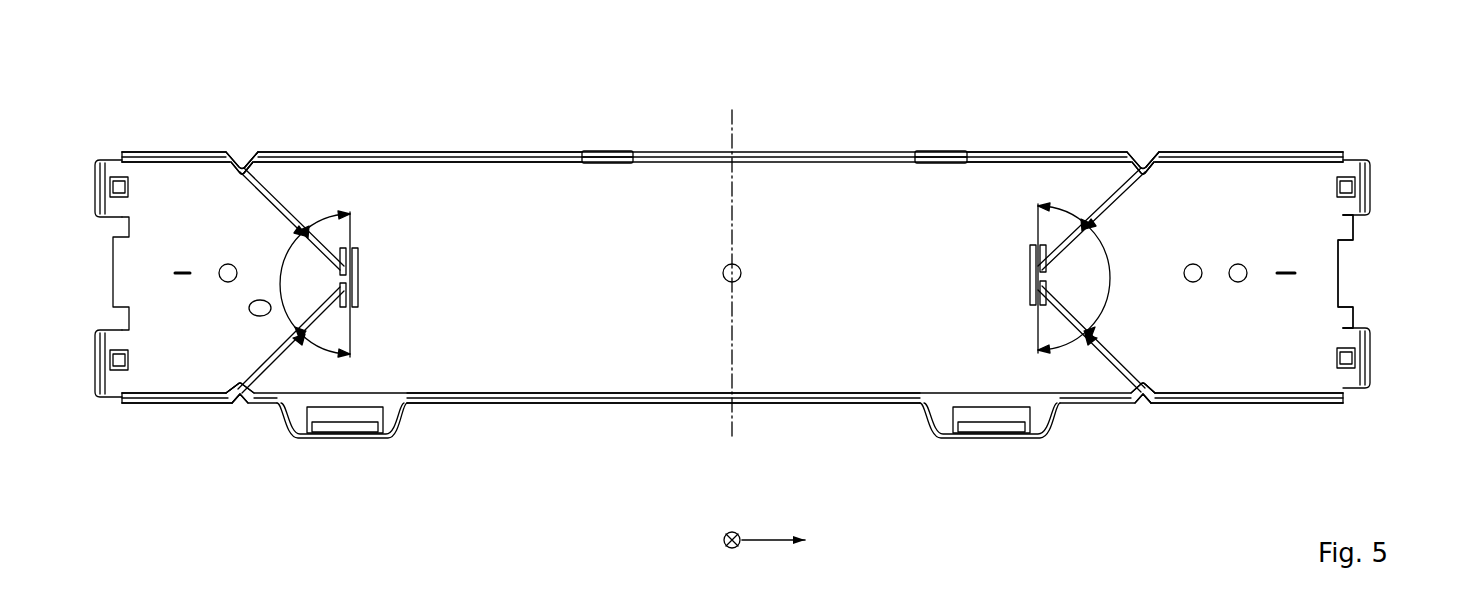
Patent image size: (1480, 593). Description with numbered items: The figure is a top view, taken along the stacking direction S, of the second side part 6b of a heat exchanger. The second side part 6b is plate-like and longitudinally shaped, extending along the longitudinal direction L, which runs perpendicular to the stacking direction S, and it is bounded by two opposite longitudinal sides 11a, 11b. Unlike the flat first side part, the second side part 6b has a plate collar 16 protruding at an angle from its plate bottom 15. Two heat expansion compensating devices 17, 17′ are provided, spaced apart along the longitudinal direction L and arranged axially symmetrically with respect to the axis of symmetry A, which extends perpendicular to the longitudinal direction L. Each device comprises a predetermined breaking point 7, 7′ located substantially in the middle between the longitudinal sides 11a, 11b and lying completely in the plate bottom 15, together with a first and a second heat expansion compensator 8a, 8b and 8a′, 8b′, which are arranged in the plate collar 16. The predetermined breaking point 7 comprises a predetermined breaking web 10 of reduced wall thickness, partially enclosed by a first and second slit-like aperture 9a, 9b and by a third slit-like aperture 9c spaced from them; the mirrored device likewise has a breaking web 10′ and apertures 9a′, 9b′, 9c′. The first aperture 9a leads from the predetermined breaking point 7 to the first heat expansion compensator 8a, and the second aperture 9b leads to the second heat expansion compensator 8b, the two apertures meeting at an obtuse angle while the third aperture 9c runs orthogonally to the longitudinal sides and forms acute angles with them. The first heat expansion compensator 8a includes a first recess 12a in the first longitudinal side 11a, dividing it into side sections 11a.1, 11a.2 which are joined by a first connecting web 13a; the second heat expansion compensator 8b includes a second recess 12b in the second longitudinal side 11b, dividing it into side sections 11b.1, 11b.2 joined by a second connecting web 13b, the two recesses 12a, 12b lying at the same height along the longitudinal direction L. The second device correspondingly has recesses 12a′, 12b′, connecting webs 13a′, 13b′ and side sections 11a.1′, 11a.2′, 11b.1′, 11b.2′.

The second side part 6b is at (1388, 164).
The predetermined breaking point 7 is at (398, 284).
The predetermined breaking point 7′ is at (990, 278).
The first heat expansion compensator 8a is at (248, 152).
The second heat expansion compensator 8b is at (249, 405).
The first heat expansion compensator 8a′ is at (1140, 152).
The second heat expansion compensator 8b′ is at (1135, 405).
The first aperture 9a is at (256, 185).
The second aperture 9b is at (268, 365).
The third aperture 9c is at (359, 298).
The first aperture 9a′ is at (1130, 192).
The second aperture 9b′ is at (1130, 360).
The third aperture 9c′ is at (1029, 298).
The predetermined breaking web 10 is at (359, 256).
The predetermined breaking web 10′ is at (1029, 255).
The first longitudinal side 11a is at (524, 150).
The first side section 11a.1 is at (142, 151).
The second side section 11a.2 is at (450, 151).
The first side section 11a.1′ is at (1272, 151).
The second side section 11a.2′ is at (832, 151).
The second longitudinal side 11b is at (541, 405).
The first side section 11b.1 is at (141, 405).
The second side section 11b.2 is at (441, 405).
The first side section 11b.1′ is at (1272, 405).
The second side section 11b.2′ is at (834, 405).
The first recess 12a is at (240, 160).
The second recess 12b is at (240, 405).
The first recess 12a′ is at (1150, 160).
The second recess 12b′ is at (1150, 405).
The first connecting web 13a is at (283, 158).
The second connecting web 13b is at (230, 390).
The first connecting web 13a′ is at (1160, 170).
The second connecting web 13b′ is at (1160, 385).
The plate bottom 15 is at (1320, 273).
The plate collar 16 is at (658, 155).
The heat expansion compensating device 17 is at (367, 205).
The heat expansion compensating device 17′ is at (966, 186).
The axis of symmetry A is at (734, 143).
The stacking direction S is at (723, 547).
The longitudinal direction L is at (785, 540).